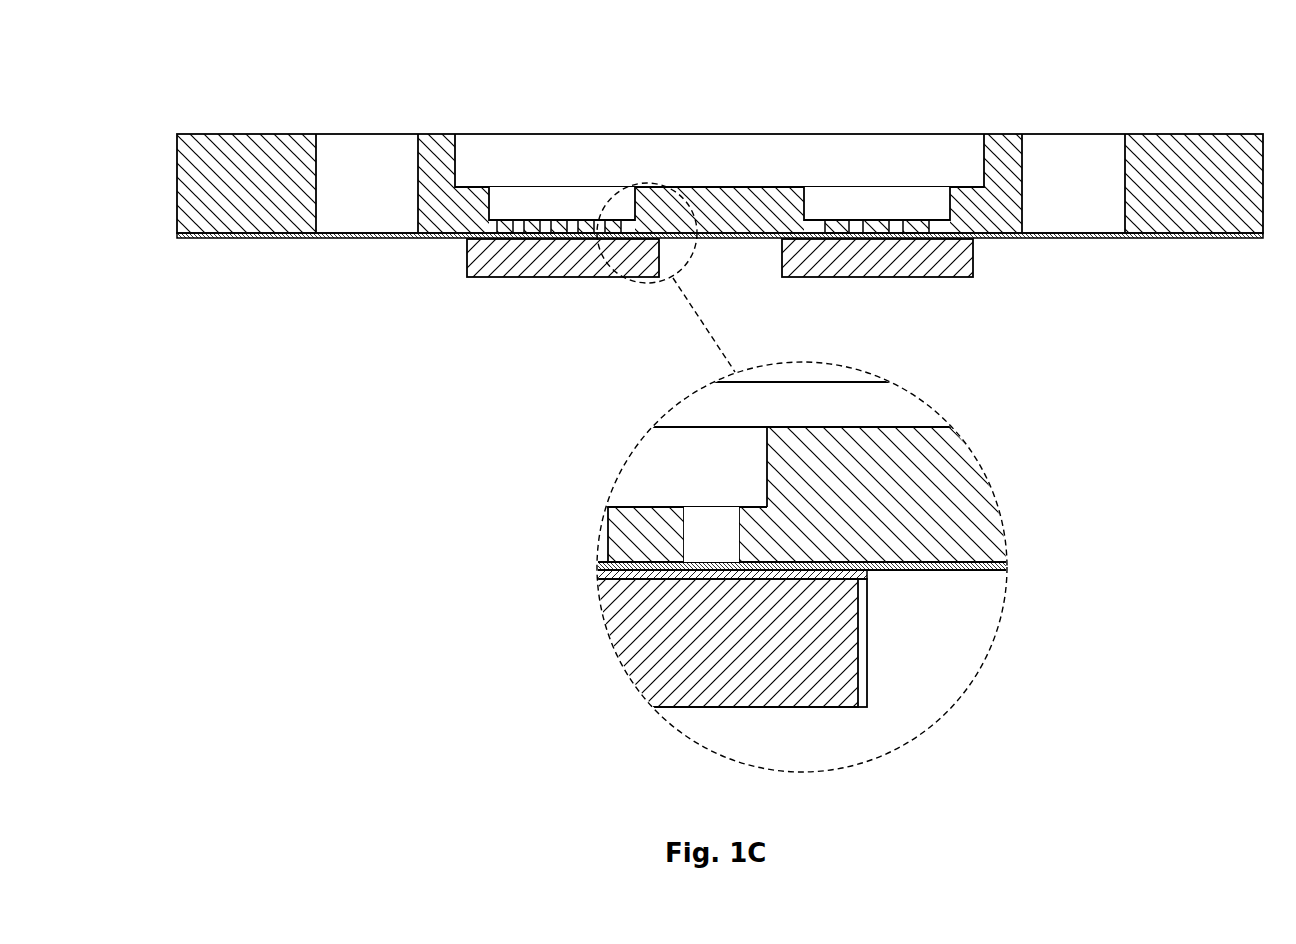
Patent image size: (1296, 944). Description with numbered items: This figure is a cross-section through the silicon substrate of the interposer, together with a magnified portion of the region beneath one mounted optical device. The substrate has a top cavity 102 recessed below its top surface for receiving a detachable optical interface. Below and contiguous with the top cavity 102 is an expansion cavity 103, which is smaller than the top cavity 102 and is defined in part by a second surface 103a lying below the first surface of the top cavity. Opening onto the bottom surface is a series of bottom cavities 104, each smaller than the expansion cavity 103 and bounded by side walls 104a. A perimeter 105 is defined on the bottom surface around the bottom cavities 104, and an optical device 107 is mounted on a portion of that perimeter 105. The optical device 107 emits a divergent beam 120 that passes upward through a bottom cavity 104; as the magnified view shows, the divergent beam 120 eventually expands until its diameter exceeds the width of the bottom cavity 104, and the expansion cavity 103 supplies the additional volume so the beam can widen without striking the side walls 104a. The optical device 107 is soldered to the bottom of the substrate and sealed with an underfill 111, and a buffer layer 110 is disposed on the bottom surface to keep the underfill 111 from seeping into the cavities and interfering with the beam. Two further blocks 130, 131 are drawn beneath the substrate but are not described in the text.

The top cavity 102 is at (873, 145).
The expansion cavity 103 is at (820, 205).
The second surface 103a is at (837, 222).
The bottom cavity 104 is at (857, 222).
The side wall of the bottom cavity 104a is at (885, 220).
The perimeter 105 is at (815, 222).
The optical device 107 is at (848, 682).
The buffer layer 110 is at (992, 570).
The underfill 111 is at (600, 573).
The divergent beam 120 is at (712, 488).
The lower block 130 is at (947, 278).
The lower block 131 is at (543, 278).